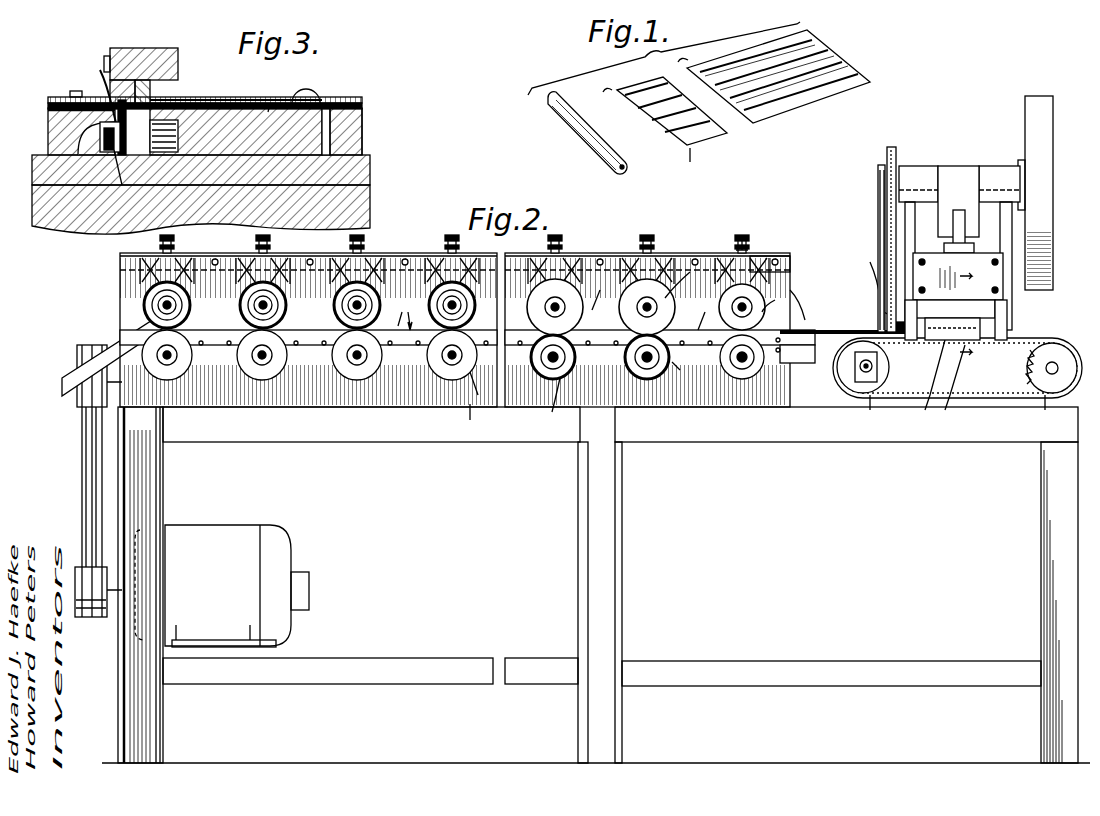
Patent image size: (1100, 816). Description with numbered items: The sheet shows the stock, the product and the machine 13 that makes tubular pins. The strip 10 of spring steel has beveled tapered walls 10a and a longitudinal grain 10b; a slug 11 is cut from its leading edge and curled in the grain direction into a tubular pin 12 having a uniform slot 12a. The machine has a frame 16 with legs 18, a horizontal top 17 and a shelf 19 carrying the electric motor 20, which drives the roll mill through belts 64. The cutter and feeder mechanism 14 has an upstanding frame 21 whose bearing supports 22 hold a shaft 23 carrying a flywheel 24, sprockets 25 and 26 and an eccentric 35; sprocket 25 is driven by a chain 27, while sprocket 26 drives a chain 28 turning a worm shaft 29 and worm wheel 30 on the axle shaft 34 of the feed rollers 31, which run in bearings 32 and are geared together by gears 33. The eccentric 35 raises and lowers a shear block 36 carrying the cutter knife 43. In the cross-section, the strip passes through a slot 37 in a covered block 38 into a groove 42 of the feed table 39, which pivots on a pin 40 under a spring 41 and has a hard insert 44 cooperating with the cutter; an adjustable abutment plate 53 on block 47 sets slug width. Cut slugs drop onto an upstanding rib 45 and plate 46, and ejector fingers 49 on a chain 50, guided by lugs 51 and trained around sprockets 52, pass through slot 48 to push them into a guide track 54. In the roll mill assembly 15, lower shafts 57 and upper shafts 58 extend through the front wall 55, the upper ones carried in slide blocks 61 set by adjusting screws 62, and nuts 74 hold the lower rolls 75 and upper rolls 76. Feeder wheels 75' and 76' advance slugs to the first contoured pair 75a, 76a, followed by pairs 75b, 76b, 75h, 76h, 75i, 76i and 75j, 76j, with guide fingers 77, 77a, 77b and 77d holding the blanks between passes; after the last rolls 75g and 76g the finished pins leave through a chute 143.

In FIG. 3, the strip of spring steel 10 is at (364, 106).
In FIG. 1, the strip of spring steel 10 is at (848, 58).
In FIG. 2, the strip of spring steel 10 is at (958, 386).
In FIG. 1, the tapered walls 10a is at (810, 116).
In FIG. 1, the grain of the metal 10b is at (582, 146).
In FIG. 3, the slug 11 is at (116, 100).
In FIG. 1, the slug 11 is at (693, 164).
In FIG. 1, the tubular pin 12 is at (552, 122).
In FIG. 1, the slot or gap 12a is at (622, 172).
In FIG. 2, the machine 13 is at (800, 448).
In FIG. 2, the cutter and feeder mechanism 14 is at (876, 170).
In FIG. 2, the roll mill assembly 15 is at (780, 250).
In FIG. 2, the frame 16 is at (625, 538).
In FIG. 2, the horizontal top 17 is at (328, 440).
In FIG. 2, the legs or uprights 18 is at (160, 492).
In FIG. 3, the shelf 19 is at (104, 72).
In FIG. 2, the shelf 19 is at (414, 660).
In FIG. 2, the electric motor 20 is at (250, 560).
In FIG. 3, the upstanding frame 21 is at (362, 176).
In FIG. 2, the upstanding frame 21 is at (1005, 308).
In FIG. 2, the bearing supports 22 is at (916, 172).
In FIG. 2, the shaft 23 is at (1020, 162).
In FIG. 2, the flywheel 24 is at (1026, 100).
In FIG. 2, the sprocket 25 is at (896, 150).
In FIG. 2, the sprocket 26 is at (878, 186).
In FIG. 2, the chain 27 is at (878, 224).
In FIG. 2, the chain 28 is at (870, 272).
In FIG. 2, the worm shaft 29 is at (860, 382).
In FIG. 2, the worm wheel 30 is at (852, 332).
In FIG. 2, the feed rollers 31 is at (935, 386).
In FIG. 2, the bearings 32 is at (995, 328).
In FIG. 2, the gears 33 is at (880, 310).
In FIG. 2, the axle shaft 34 is at (896, 322).
In FIG. 2, the eccentric 35 is at (955, 172).
In FIG. 3, the shear block 36 is at (170, 48).
In FIG. 2, the shear block 36 is at (958, 212).
In FIG. 3, the slot 37 is at (340, 106).
In FIG. 3, the covered block 38 is at (363, 124).
In FIG. 3, the feed table 39 is at (250, 104).
In FIG. 3, the pin 40 is at (312, 94).
In FIG. 3, the spring 41 is at (200, 104).
In FIG. 3, the groove 42 is at (276, 100).
In FIG. 3, the cutter knife 43 is at (142, 92).
In FIG. 3, the insert 44 is at (172, 102).
In FIG. 3, the upstanding rib 45 is at (160, 154).
In FIG. 3, the plate 46 is at (48, 112).
In FIG. 3, the block 47 is at (50, 134).
In FIG. 3, the slot 48 is at (201, 170).
In FIG. 2, the ejector fingers 49 is at (876, 408).
In FIG. 3, the chain 50 is at (108, 154).
In FIG. 2, the chain 50 is at (1068, 342).
In FIG. 3, the lugs 51 is at (124, 174).
In FIG. 2, the sprockets 52 is at (840, 378).
In FIG. 3, the abutment plate 53 is at (66, 94).
In FIG. 2, the guide track 54 is at (812, 300).
In FIG. 2, the front wall 55 is at (420, 412).
In FIG. 2, the lower shafts 57 is at (628, 395).
In FIG. 2, the upper shafts 58 is at (647, 307).
In FIG. 2, the slide blocks 61 is at (758, 256).
In FIG. 2, the adjusting screws 62 is at (742, 227).
In FIG. 2, the belts 64 is at (100, 468).
In FIG. 2, the nuts 74 is at (545, 262).
In FIG. 2, the lower rolls or wheels 75 is at (695, 373).
In FIG. 2, the feeder wheel 75' is at (742, 369).
In FIG. 2, the contoured male or female wheel 75a is at (652, 378).
In FIG. 2, the lower forming wheel 75b is at (545, 378).
In FIG. 2, the last lower roll 75g is at (430, 372).
In FIG. 2, the lower forming wheel 75h is at (352, 380).
In FIG. 2, the lower forming wheel 75i is at (275, 372).
In FIG. 2, the lower forming wheel 75j is at (162, 380).
In FIG. 2, the upper rolls or wheels 76 is at (727, 307).
In FIG. 2, the feeder wheel 76' is at (791, 284).
In FIG. 2, the contoured male or female wheel 76a is at (672, 290).
In FIG. 2, the upper forming wheel 76b is at (567, 295).
In FIG. 2, the last upper roll 76g is at (464, 292).
In FIG. 2, the upper forming wheel 76h is at (368, 292).
In FIG. 2, the upper forming wheel 76i is at (275, 292).
In FIG. 2, the upper forming wheel 76j is at (178, 292).
In FIG. 2, the guide plates or fingers 77 is at (404, 312).
In FIG. 2, the guide finger 77a is at (710, 321).
In FIG. 2, the guide finger 77b is at (606, 291).
In FIG. 2, the guide finger 77d is at (470, 386).
In FIG. 2, the chute 143 is at (62, 385).